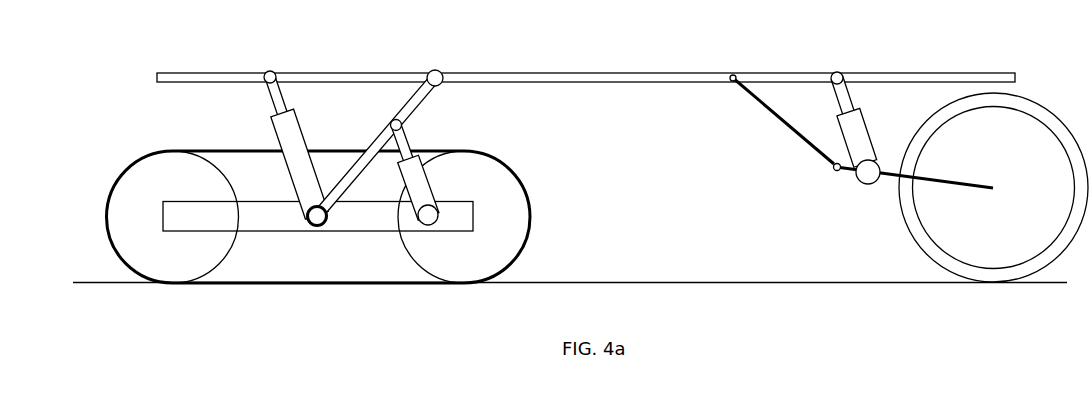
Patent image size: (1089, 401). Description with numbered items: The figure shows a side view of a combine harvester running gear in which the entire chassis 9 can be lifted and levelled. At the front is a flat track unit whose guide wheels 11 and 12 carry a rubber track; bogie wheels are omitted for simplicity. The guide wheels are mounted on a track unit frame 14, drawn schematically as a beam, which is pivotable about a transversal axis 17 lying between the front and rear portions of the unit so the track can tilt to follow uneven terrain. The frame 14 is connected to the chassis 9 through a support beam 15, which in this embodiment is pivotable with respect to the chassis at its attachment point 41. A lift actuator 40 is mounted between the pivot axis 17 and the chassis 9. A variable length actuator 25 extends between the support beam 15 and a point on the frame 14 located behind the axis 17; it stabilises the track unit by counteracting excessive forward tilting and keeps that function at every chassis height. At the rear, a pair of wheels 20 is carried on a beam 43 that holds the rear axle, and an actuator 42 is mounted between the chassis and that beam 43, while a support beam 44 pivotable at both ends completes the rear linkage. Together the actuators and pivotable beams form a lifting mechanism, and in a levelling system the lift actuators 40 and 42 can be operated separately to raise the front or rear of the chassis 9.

The chassis 9 is at (610, 78).
The guide wheel 11 is at (167, 265).
The guide wheel 12 is at (477, 265).
The track unit frame 14 is at (277, 223).
The support beam 15 is at (365, 163).
The transversal axis 17 is at (318, 218).
The wheels 20 is at (963, 230).
The variable length actuator 25 is at (418, 185).
The lift actuator 40 is at (288, 131).
The attachment point 41 is at (437, 73).
The actuator 42 is at (862, 130).
The beam 43 is at (950, 185).
The support beam 44 is at (782, 123).